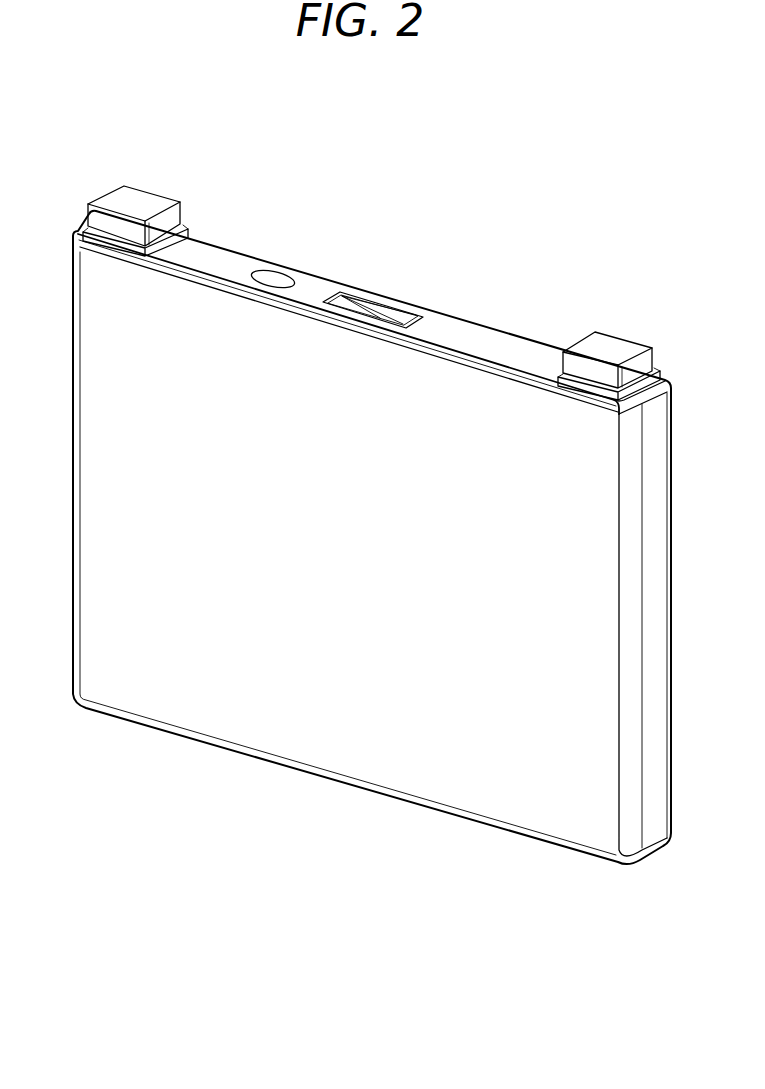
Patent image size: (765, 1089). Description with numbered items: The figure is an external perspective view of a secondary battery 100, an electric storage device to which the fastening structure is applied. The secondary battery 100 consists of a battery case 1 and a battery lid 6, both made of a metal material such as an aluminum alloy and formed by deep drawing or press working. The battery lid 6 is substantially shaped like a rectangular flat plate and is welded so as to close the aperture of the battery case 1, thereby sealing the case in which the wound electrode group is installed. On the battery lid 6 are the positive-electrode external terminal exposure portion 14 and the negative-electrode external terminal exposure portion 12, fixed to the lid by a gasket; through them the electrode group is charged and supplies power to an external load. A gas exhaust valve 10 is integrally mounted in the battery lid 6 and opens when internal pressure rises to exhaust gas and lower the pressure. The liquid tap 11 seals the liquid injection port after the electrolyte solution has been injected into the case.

The secondary battery 100 is at (573, 183).
The battery case 1 is at (225, 747).
The battery lid 6 is at (478, 332).
The gas exhaust valve 10 is at (349, 300).
The liquid tap 11 is at (273, 278).
The negative-electrode external terminal exposure portion 12 is at (611, 335).
The positive-electrode external terminal exposure portion 14 is at (141, 200).